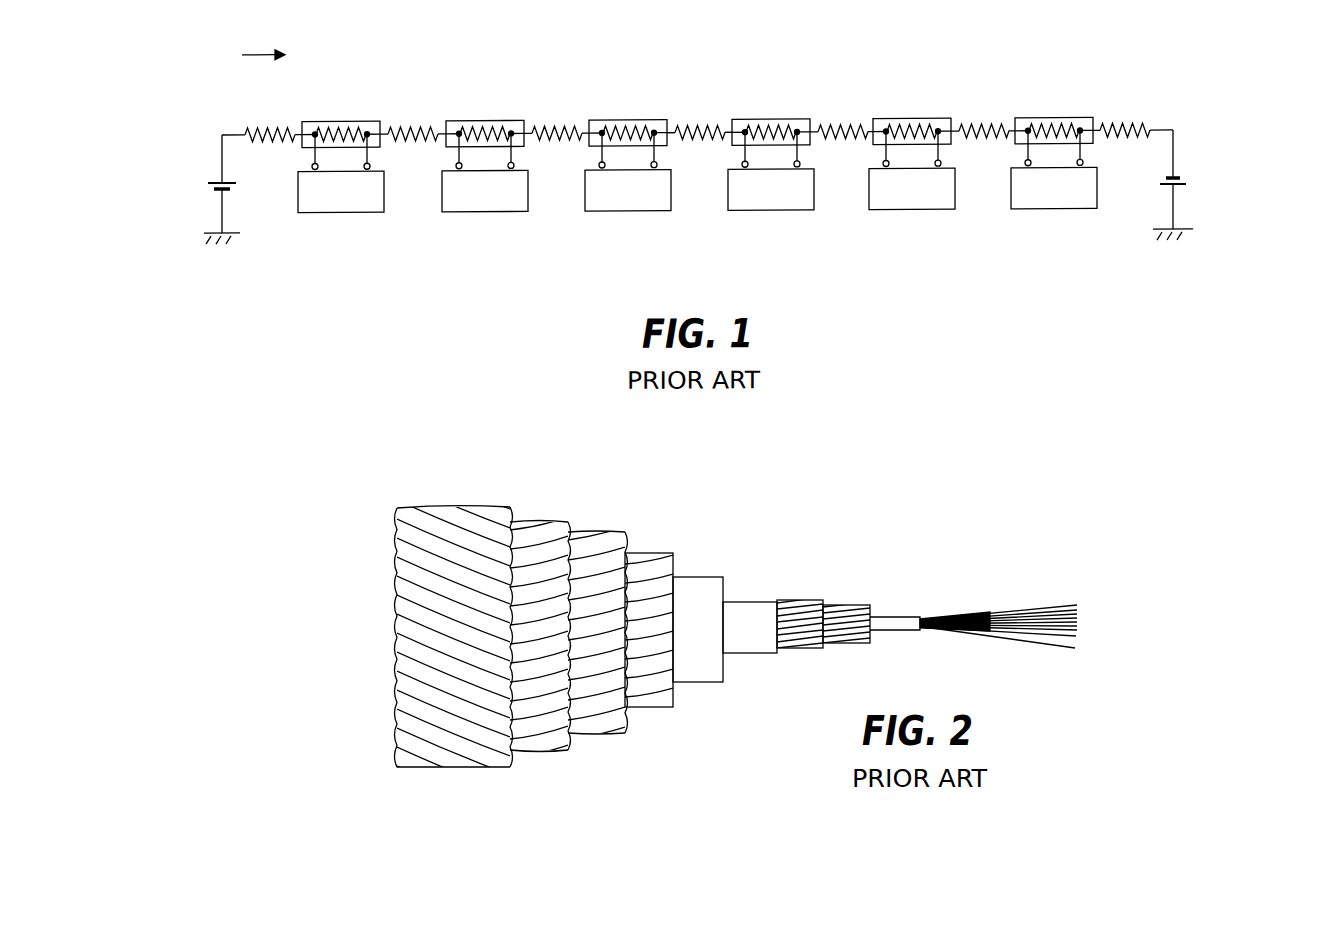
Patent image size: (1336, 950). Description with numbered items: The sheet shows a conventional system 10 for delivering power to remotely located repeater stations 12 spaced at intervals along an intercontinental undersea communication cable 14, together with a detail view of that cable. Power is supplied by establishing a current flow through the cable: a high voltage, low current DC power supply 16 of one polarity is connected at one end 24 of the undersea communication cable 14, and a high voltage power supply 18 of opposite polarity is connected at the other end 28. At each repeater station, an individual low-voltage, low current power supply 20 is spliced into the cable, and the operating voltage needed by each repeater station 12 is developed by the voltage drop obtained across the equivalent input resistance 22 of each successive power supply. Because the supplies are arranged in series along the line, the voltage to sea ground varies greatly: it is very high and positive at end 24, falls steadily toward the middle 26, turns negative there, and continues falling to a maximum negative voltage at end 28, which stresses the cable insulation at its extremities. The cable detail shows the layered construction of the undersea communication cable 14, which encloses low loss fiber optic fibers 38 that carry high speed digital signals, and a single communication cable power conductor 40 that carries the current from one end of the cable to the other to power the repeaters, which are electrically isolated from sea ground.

In FIG. 1, the conventional system 10 is at (618, 22).
In FIG. 1, the repeater station 12 is at (1055, 249).
In FIG. 1, the undersea communication cable 14 is at (709, 83).
In FIG. 2, the undersea communication cable 14 is at (443, 496).
In FIG. 1, the high voltage, low current DC power supply 16 is at (236, 188).
In FIG. 1, the high voltage power supply 18 is at (1160, 191).
In FIG. 1, the low-voltage, low current power supply 20 is at (1095, 121).
In FIG. 1, the equivalent input resistance 22 is at (1118, 170).
In FIG. 1, the end 24 is at (190, 181).
In FIG. 1, the middle 26 is at (700, 150).
In FIG. 1, the end 28 is at (1228, 183).
In FIG. 2, the fiber optic fibers 38 is at (1013, 606).
In FIG. 2, the communication cable power conductor 40 is at (752, 600).